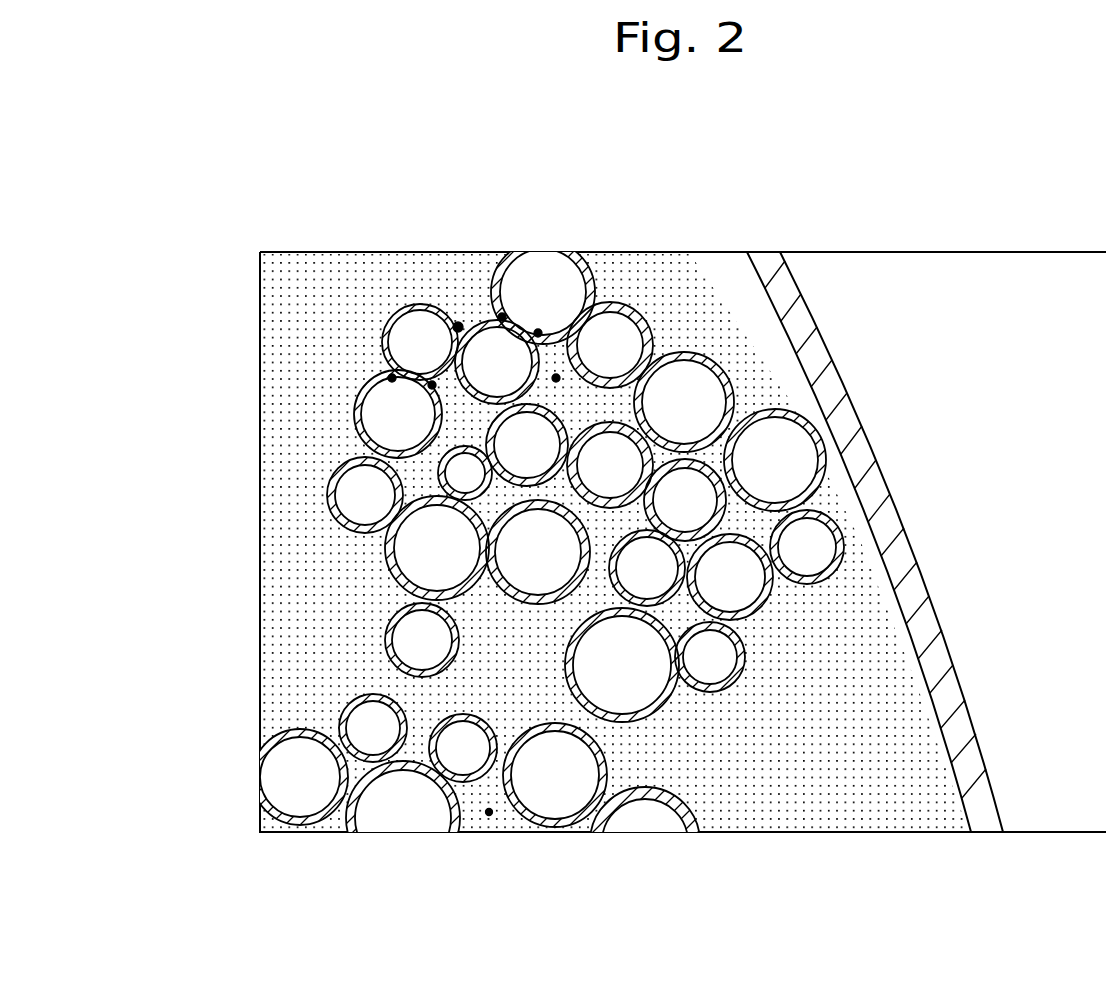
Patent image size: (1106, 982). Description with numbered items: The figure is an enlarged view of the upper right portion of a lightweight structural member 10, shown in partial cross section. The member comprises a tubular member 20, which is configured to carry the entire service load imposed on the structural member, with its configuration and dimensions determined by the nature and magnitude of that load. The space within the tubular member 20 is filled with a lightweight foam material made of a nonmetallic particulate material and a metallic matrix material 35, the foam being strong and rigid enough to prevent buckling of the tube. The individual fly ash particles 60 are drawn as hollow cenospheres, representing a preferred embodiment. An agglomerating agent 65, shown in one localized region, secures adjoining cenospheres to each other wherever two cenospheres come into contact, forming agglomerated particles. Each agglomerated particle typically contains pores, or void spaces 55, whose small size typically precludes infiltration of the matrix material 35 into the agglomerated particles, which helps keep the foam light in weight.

The lightweight structural member 10 is at (360, 245).
The tubular member 20 is at (817, 329).
The metallic matrix material 35 is at (313, 606).
The pores 55 is at (556, 375).
The fly ash particles 60 is at (627, 303).
The agglomerating agent 65 is at (458, 322).